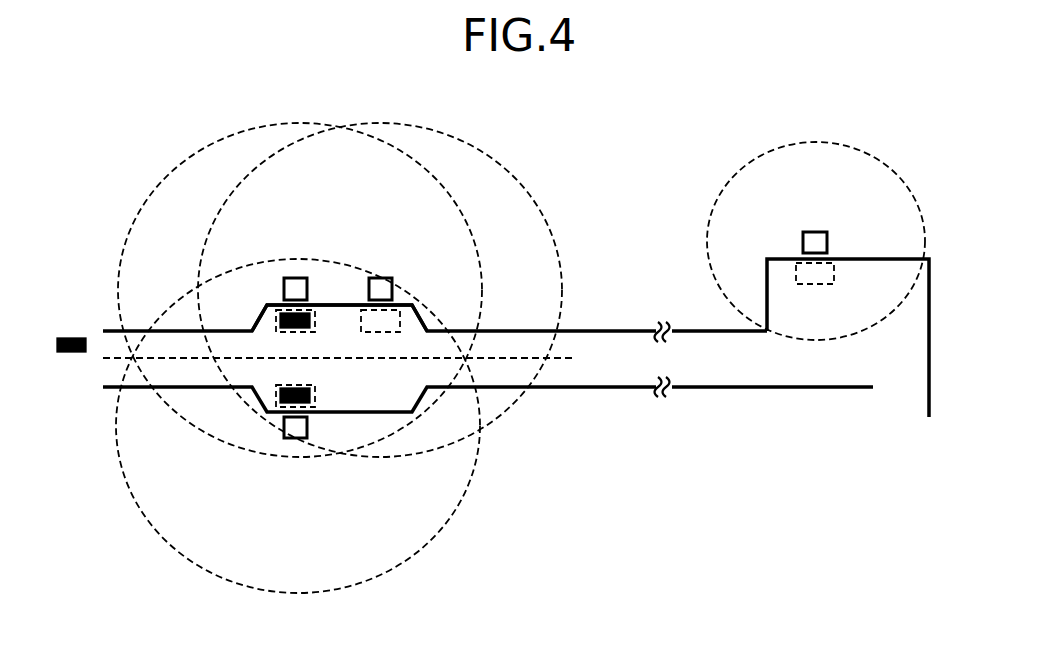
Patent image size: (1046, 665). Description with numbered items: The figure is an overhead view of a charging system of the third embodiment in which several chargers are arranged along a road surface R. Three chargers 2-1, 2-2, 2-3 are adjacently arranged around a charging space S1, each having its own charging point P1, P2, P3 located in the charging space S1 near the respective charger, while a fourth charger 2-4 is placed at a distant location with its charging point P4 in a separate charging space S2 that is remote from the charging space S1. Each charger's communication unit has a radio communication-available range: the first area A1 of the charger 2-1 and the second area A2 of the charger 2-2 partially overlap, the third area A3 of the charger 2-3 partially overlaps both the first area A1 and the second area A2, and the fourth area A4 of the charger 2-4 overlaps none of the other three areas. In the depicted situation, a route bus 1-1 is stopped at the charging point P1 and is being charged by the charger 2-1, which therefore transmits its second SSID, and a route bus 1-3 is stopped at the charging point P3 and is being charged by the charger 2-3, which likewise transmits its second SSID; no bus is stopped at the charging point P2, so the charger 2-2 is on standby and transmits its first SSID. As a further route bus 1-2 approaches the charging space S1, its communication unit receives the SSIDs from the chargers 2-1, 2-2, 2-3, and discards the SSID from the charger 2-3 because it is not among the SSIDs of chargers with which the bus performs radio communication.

The route bus 1-1 is at (283, 316).
The route bus 1-2 is at (70, 354).
The route bus 1-3 is at (283, 400).
The charger 2-1 is at (295, 290).
The charger 2-2 is at (381, 290).
The charger 2-3 is at (295, 428).
The charger 2-4 is at (817, 231).
The first radio communication-available area A1 is at (257, 129).
The second radio communication-available area A2 is at (428, 112).
The third radio communication-available area A3 is at (253, 597).
The fourth radio communication-available area A4 is at (835, 142).
The charging point P1 is at (277, 331).
The charging point P2 is at (400, 320).
The charging point P3 is at (277, 391).
The charging point P4 is at (818, 285).
The road surface R is at (605, 350).
The charging space S1 is at (345, 318).
The charging space S2 is at (921, 323).